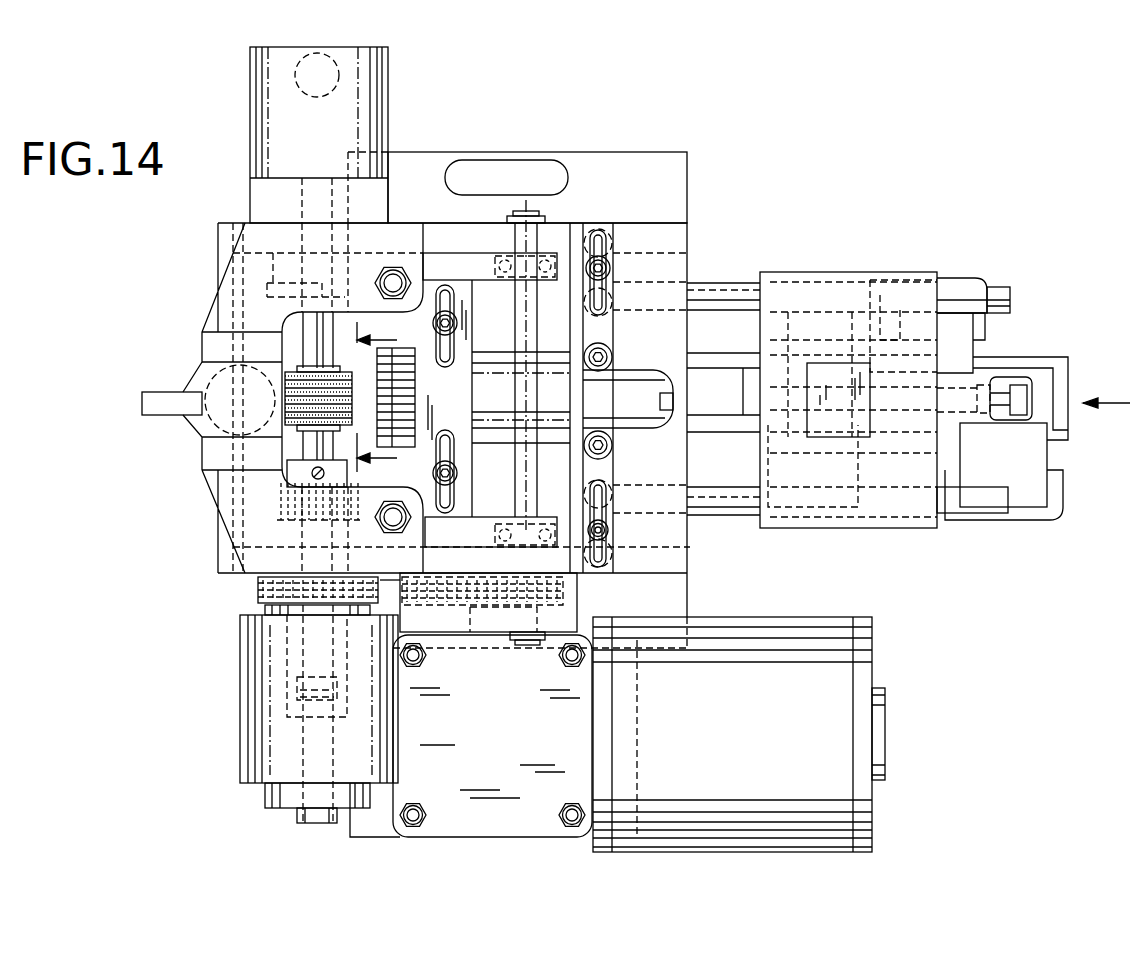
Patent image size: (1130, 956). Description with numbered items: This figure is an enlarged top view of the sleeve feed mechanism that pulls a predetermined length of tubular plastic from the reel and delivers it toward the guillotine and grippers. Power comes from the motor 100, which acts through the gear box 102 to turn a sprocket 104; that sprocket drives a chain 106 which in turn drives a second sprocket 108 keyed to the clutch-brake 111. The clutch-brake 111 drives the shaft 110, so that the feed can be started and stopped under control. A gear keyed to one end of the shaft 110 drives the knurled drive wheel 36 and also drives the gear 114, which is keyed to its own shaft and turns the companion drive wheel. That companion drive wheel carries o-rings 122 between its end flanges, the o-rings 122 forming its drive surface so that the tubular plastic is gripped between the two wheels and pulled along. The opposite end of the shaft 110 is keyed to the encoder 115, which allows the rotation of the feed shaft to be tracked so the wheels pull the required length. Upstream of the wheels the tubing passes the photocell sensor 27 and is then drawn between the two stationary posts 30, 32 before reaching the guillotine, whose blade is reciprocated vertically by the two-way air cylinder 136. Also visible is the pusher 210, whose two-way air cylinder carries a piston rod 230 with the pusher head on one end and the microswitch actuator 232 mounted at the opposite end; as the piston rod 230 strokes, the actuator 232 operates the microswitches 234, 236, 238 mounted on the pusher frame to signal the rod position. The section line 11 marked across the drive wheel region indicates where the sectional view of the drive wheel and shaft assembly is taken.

The encoder 115 is at (366, 106).
The photocell sensor 27 is at (830, 380).
The microswitch 238 is at (956, 278).
The knurled drive wheel 36 is at (243, 368).
The two-way air cylinder 136 is at (218, 377).
The section line 11 is at (377, 400).
The stationary post 32 is at (606, 356).
The piston rod 230 is at (720, 397).
The microswitch actuator 232 is at (1030, 378).
The pusher 210 is at (388, 397).
The o-rings 122 is at (290, 405).
The stationary post 30 is at (606, 447).
The gear 114 is at (280, 503).
The microswitch 236 is at (821, 522).
The microswitch 234 is at (1022, 513).
The sprocket 108 is at (262, 582).
The sprocket 104 is at (580, 604).
The shaft 110 is at (297, 640).
The chain 106 is at (412, 592).
The clutch-brake 111 is at (263, 705).
The gear box 102 is at (517, 756).
The motor 100 is at (758, 747).